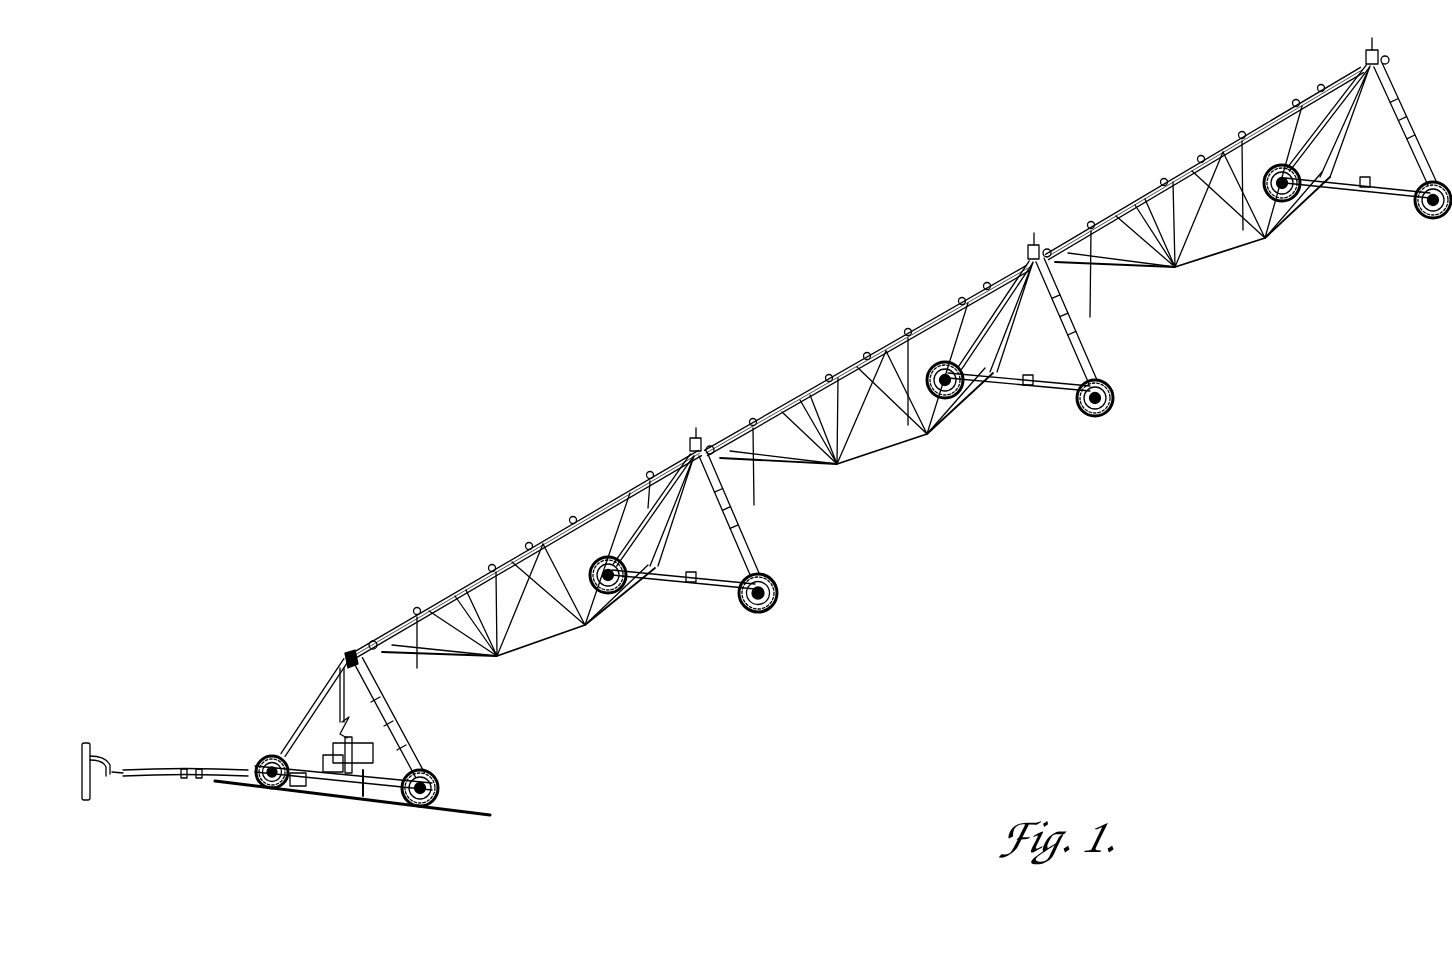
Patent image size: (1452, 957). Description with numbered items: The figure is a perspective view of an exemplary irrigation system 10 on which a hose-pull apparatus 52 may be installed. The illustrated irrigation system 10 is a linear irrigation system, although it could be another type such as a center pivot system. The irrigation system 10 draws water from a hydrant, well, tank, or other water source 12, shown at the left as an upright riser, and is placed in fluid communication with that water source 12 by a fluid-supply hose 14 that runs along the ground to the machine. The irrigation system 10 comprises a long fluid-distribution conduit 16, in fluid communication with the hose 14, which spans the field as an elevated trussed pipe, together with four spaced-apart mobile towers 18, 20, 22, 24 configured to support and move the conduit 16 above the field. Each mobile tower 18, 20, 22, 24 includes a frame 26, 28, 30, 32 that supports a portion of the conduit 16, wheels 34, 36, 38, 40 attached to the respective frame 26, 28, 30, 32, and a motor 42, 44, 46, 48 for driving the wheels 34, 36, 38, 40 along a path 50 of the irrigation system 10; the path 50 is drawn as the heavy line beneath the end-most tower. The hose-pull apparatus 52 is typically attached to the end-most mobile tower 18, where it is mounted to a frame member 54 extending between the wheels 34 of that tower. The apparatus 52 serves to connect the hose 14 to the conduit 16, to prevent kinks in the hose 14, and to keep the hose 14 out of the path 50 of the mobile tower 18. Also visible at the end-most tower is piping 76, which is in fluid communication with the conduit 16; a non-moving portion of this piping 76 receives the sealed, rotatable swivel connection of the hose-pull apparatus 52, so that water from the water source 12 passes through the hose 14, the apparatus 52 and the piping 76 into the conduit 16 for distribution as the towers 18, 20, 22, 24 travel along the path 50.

The irrigation system 10 is at (766, 466).
The water source 12 is at (87, 745).
The fluid-supply hose 14 is at (170, 780).
The fluid-distribution conduit 16 is at (450, 600).
The mobile tower 18 is at (340, 650).
The mobile tower 20 is at (673, 443).
The mobile tower 22 is at (1017, 247).
The mobile tower 24 is at (1343, 65).
The frame 26 is at (427, 740).
The frame 28 is at (762, 553).
The frame 30 is at (1100, 347).
The frame 32 is at (1427, 133).
The wheels 34 is at (258, 760).
The wheels 36 is at (740, 603).
The wheels 38 is at (1075, 403).
The wheels 40 is at (1415, 212).
The motor 42 is at (345, 775).
The motor 44 is at (692, 570).
The motor 46 is at (1035, 377).
The motor 48 is at (1365, 177).
The path 50 is at (480, 810).
The hose-pull apparatus 52 is at (283, 800).
The frame member 54 is at (395, 777).
The piping 76 is at (338, 712).